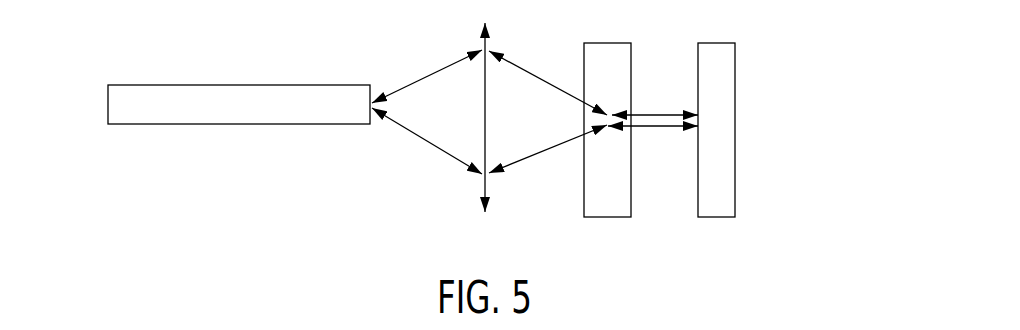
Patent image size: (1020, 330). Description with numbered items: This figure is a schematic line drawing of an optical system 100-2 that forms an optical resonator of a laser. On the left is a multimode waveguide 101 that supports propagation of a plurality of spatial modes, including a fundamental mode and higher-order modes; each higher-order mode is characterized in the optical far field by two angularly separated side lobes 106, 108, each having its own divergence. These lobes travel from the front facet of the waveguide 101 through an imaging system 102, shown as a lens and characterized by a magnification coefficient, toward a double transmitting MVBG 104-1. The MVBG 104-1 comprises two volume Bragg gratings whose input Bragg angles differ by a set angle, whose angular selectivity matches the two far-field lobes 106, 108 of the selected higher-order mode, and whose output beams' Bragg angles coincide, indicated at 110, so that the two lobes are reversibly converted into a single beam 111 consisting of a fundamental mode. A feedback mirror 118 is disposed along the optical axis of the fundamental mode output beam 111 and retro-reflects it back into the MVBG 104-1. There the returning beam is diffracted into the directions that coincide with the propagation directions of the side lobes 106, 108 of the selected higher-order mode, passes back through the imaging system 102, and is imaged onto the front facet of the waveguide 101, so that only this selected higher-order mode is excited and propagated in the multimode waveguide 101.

The optical system 100-2 is at (140, 72).
The multimode waveguide 101 is at (108, 96).
The imaging system 102 is at (482, 178).
The side lobe 106 is at (421, 79).
The side lobe 108 is at (422, 141).
The double transmitting MVBG 104-1 is at (584, 183).
The fundamental mode output beam 111 is at (652, 114).
The coincident output beam Bragg angles 110 is at (645, 130).
The feedback mirror 118 is at (735, 116).